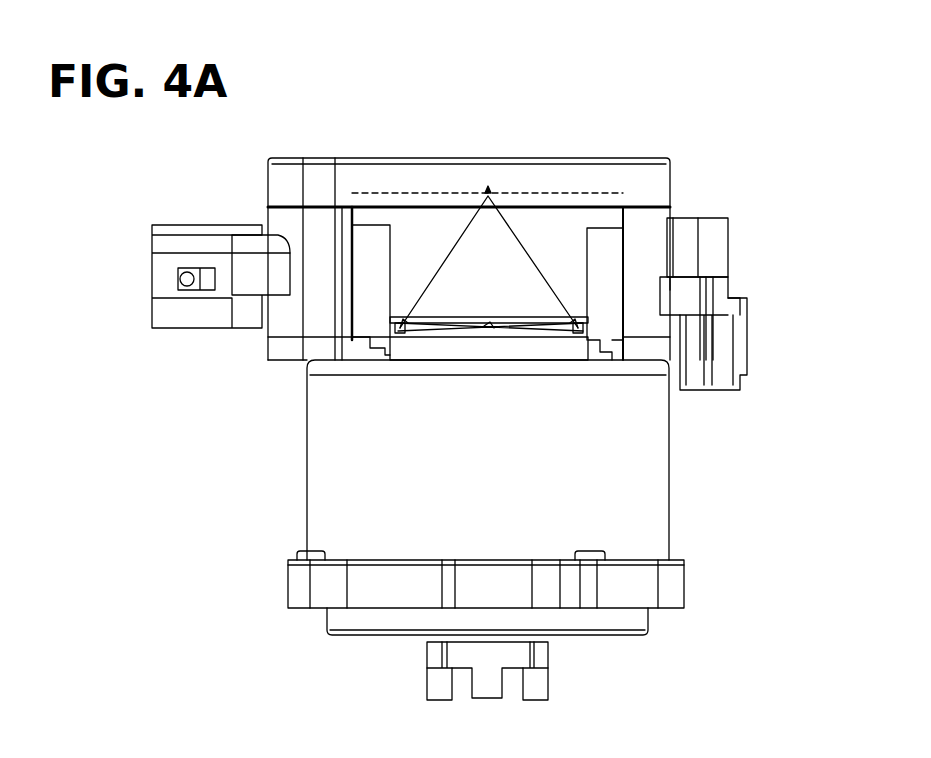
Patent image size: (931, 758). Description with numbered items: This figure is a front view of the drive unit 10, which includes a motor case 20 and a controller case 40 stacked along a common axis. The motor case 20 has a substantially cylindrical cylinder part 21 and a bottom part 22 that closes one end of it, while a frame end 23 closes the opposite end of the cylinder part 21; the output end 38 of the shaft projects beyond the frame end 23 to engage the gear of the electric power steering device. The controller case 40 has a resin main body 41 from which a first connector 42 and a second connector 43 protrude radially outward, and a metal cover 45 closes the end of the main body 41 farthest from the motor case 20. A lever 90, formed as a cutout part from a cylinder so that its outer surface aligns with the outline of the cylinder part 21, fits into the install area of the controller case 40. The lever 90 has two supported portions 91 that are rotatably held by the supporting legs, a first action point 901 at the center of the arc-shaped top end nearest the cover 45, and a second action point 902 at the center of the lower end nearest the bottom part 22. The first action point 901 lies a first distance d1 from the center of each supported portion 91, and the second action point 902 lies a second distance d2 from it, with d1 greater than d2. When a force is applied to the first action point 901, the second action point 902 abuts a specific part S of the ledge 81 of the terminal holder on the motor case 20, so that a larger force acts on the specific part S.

The drive unit 10 is at (665, 148).
The motor case 20 is at (312, 530).
The cylinder part 21 is at (313, 502).
The bottom part 22 is at (330, 349).
The frame end 23 is at (295, 590).
The output end 38 is at (430, 658).
The controller case 40 is at (645, 228).
The main body 41 is at (612, 262).
The first connector 42 is at (150, 281).
The second connector 43 is at (712, 395).
The cover 45 is at (268, 187).
The ledge 81 is at (543, 352).
The lever 90 is at (413, 218).
The first action point 901 is at (490, 190).
The second action point 902 is at (490, 330).
The supported portion 91 is at (400, 337).
The specific part S is at (497, 330).
The first distance d1 is at (442, 262).
The second distance d2 is at (442, 328).